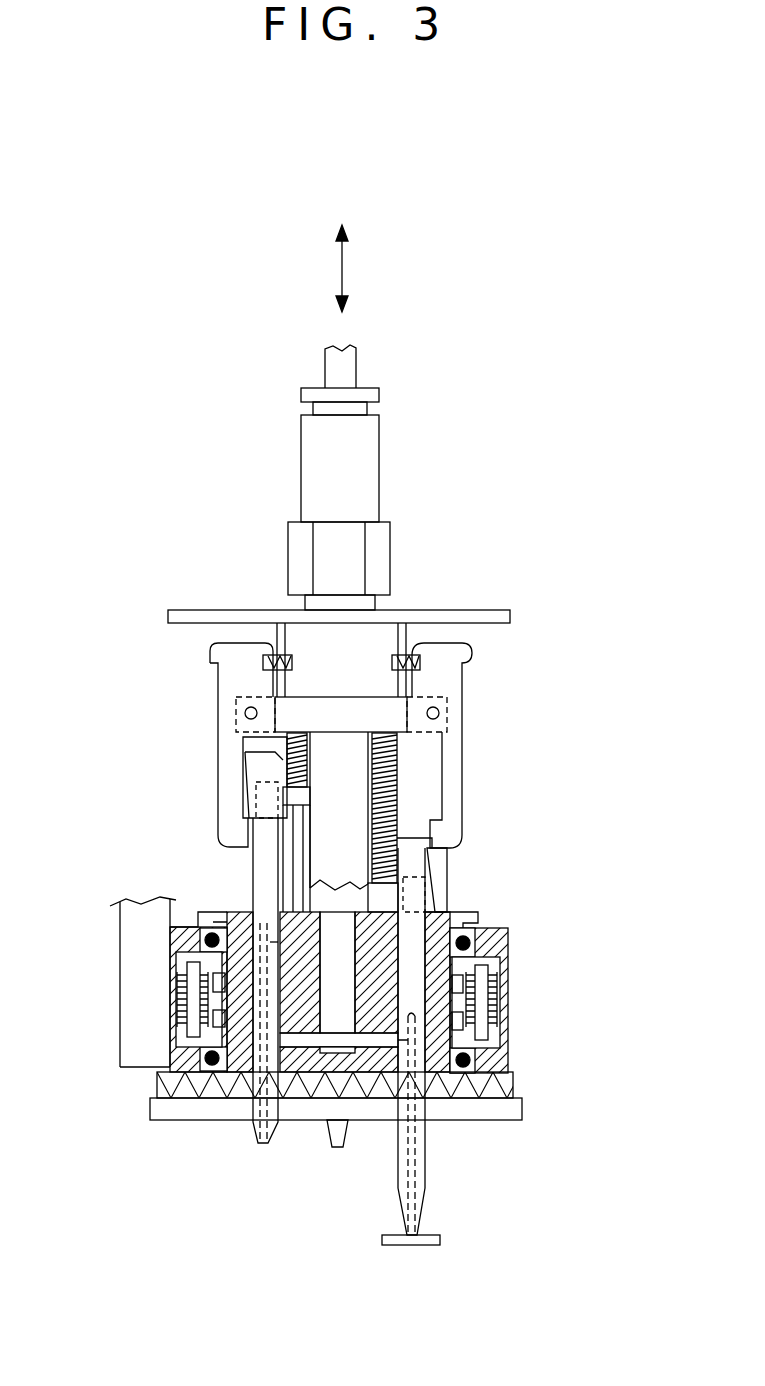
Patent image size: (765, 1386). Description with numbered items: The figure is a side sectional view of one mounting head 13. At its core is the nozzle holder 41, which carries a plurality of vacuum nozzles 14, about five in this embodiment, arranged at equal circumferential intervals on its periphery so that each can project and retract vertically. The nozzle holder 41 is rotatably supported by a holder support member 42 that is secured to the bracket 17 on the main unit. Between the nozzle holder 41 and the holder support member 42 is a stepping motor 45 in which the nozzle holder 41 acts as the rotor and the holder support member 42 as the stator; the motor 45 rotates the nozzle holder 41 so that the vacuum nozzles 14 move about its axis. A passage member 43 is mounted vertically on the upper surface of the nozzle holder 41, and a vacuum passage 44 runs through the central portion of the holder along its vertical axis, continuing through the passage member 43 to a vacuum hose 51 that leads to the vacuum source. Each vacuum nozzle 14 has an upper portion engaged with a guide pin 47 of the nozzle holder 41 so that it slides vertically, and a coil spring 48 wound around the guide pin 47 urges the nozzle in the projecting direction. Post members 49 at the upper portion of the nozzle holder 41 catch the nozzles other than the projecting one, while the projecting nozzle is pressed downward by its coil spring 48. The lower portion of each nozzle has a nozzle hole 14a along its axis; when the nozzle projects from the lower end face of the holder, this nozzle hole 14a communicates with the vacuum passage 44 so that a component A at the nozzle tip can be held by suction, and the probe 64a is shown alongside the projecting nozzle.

The mounting head 13 is at (498, 316).
The vacuum hose 51 is at (349, 369).
The passage member 43 is at (390, 556).
The post members 49 is at (210, 650).
The coil spring 48 is at (290, 767).
The guide pin 47 is at (298, 895).
The vacuum passage 44 is at (345, 948).
The nozzle holder 41 is at (230, 918).
The holder support member 42 is at (177, 1050).
The bracket 17 is at (138, 953).
The probe 64a is at (247, 1118).
The nozzle hole 14a is at (413, 1198).
The vacuum nozzles 14 is at (395, 1133).
The component A is at (430, 1248).
The motor 45 is at (575, 938).